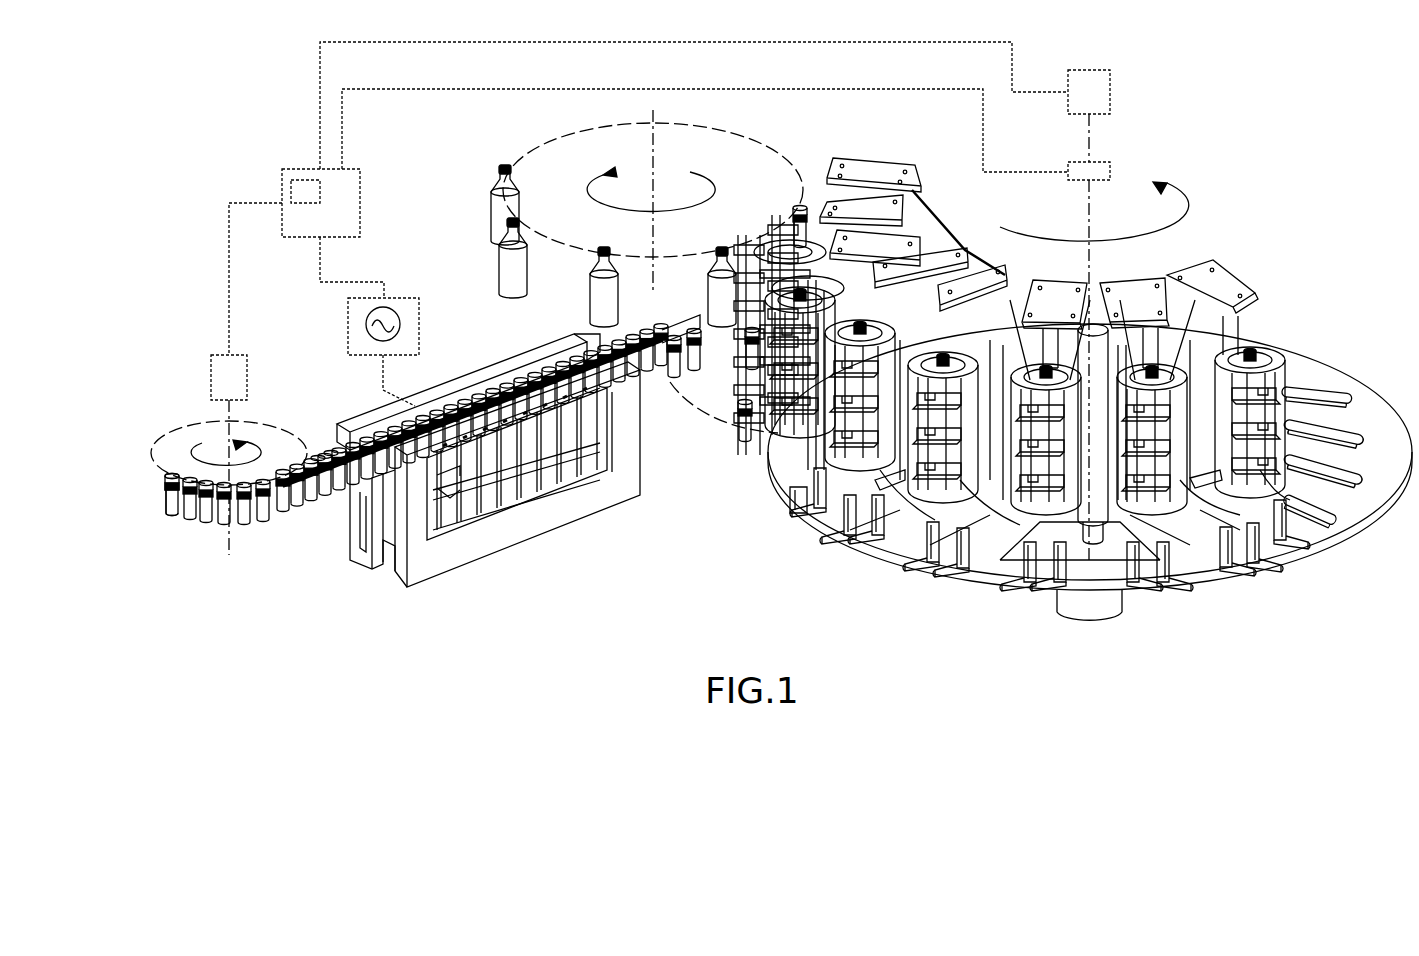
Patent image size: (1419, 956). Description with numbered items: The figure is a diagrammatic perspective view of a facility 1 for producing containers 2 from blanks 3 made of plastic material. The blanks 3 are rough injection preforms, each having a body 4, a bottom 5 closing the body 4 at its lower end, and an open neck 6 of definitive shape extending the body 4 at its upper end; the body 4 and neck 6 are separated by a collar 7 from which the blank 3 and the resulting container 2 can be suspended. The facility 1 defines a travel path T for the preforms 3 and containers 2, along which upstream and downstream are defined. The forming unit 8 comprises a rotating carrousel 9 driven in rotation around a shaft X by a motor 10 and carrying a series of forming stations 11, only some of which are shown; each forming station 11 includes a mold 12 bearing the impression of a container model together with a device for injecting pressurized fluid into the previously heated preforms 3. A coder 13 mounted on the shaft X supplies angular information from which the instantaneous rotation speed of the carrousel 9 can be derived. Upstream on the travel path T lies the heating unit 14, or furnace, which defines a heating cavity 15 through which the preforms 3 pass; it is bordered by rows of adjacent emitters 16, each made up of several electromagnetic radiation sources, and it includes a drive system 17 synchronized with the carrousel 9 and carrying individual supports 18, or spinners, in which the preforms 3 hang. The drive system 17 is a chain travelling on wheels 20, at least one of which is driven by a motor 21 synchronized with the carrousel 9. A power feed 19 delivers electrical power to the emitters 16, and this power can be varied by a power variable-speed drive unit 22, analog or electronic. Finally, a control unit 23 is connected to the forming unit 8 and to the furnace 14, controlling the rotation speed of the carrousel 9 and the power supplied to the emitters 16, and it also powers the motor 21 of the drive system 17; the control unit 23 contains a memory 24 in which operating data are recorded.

The facility 1 is at (1262, 92).
The container 2 is at (505, 210).
The blank 3 is at (180, 518).
The body 4 is at (167, 503).
The bottom 5 is at (172, 520).
The neck 6 is at (165, 477).
The collar 7 is at (165, 490).
The forming unit 8 is at (1262, 280).
The carrousel 9 is at (1306, 372).
The motor 10 is at (1103, 105).
The forming station 11 is at (1200, 280).
The mold 12 is at (797, 193).
The coder 13 is at (1099, 161).
The heating unit 14 is at (367, 421).
The heating cavity 15 is at (368, 517).
The emitter 16 is at (578, 430).
The drive system 17 is at (192, 422).
The support 18 is at (331, 455).
The power feed 19 is at (348, 322).
The wheel 20 is at (226, 452).
The motor 21 is at (243, 391).
The power variable-speed drive unit 22 is at (400, 324).
The control unit 23 is at (351, 232).
The memory 24 is at (298, 178).
The travel path T is at (607, 354).
The shaft X is at (1086, 213).